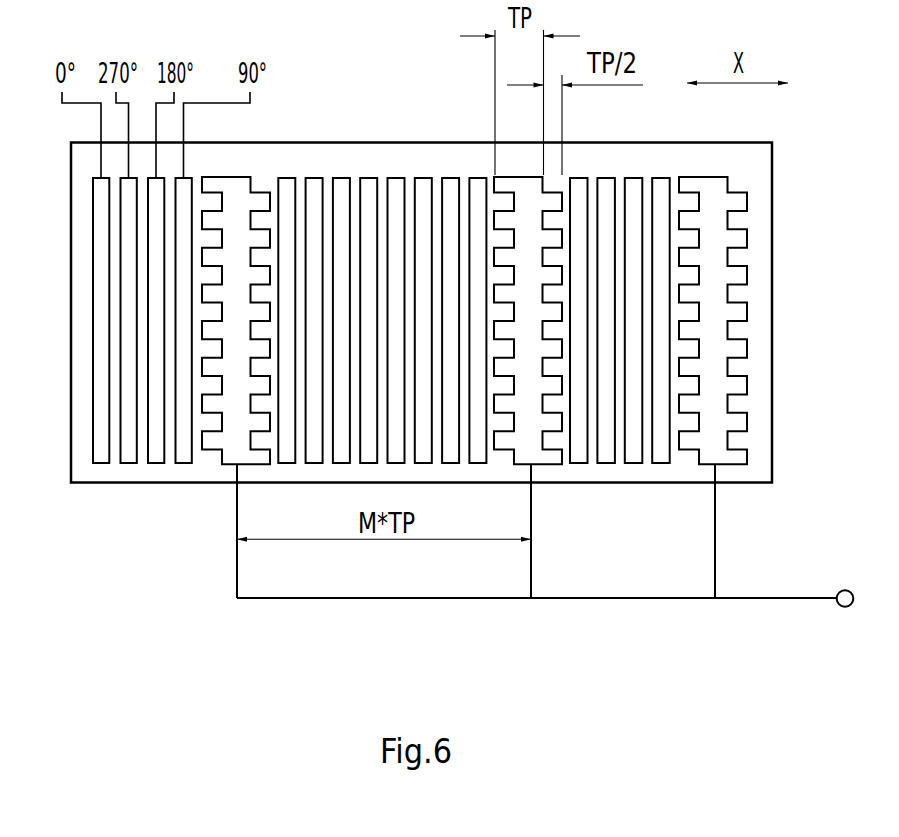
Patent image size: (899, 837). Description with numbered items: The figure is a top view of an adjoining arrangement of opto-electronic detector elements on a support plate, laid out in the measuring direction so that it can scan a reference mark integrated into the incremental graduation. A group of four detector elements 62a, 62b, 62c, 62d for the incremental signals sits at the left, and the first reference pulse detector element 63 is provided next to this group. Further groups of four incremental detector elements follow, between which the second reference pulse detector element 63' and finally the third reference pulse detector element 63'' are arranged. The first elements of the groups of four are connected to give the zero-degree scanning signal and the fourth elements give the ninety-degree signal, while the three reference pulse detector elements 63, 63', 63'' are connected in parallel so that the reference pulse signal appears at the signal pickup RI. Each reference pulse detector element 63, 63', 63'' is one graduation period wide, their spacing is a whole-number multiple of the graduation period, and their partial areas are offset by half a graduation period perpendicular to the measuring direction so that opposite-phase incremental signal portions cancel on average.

The detector element 62a is at (100, 205).
The detector element 62b is at (127, 282).
The detector element 62c is at (153, 358).
The detector element 62d is at (184, 463).
The first reference pulse detector element 63 is at (225, 387).
The second reference pulse detector element 63' is at (545, 387).
The third reference pulse detector element 63'' is at (733, 387).
The signal pickup RI is at (845, 590).